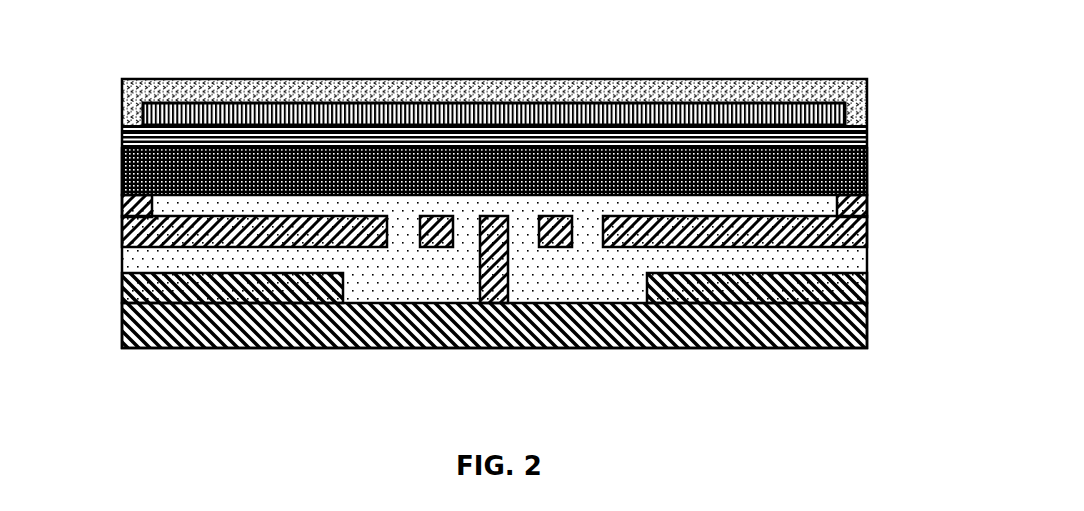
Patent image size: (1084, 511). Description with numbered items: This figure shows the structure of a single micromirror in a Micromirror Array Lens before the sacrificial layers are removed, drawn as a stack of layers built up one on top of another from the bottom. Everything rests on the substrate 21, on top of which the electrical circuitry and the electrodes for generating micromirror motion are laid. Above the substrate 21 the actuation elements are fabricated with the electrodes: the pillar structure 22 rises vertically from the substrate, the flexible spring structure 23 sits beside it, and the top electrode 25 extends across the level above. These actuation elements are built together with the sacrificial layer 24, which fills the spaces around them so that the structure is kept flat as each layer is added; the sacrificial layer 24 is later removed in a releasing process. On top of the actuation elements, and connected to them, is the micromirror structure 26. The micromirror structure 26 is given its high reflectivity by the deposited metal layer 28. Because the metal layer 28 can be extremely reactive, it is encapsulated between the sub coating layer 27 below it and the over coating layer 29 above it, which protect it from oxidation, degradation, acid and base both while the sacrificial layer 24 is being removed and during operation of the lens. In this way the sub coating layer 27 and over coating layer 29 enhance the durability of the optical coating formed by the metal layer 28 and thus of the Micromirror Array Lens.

The substrate 21 is at (850, 330).
The pillar structure 22 is at (493, 260).
The flexible spring structure 23 is at (423, 247).
The sacrificial layer 24 is at (848, 260).
The top electrode 25 is at (150, 233).
The micromirror structure 26 is at (124, 159).
The sub coating layer 27 is at (842, 138).
The metal layer 28 is at (162, 112).
The over coating layer 29 is at (178, 83).